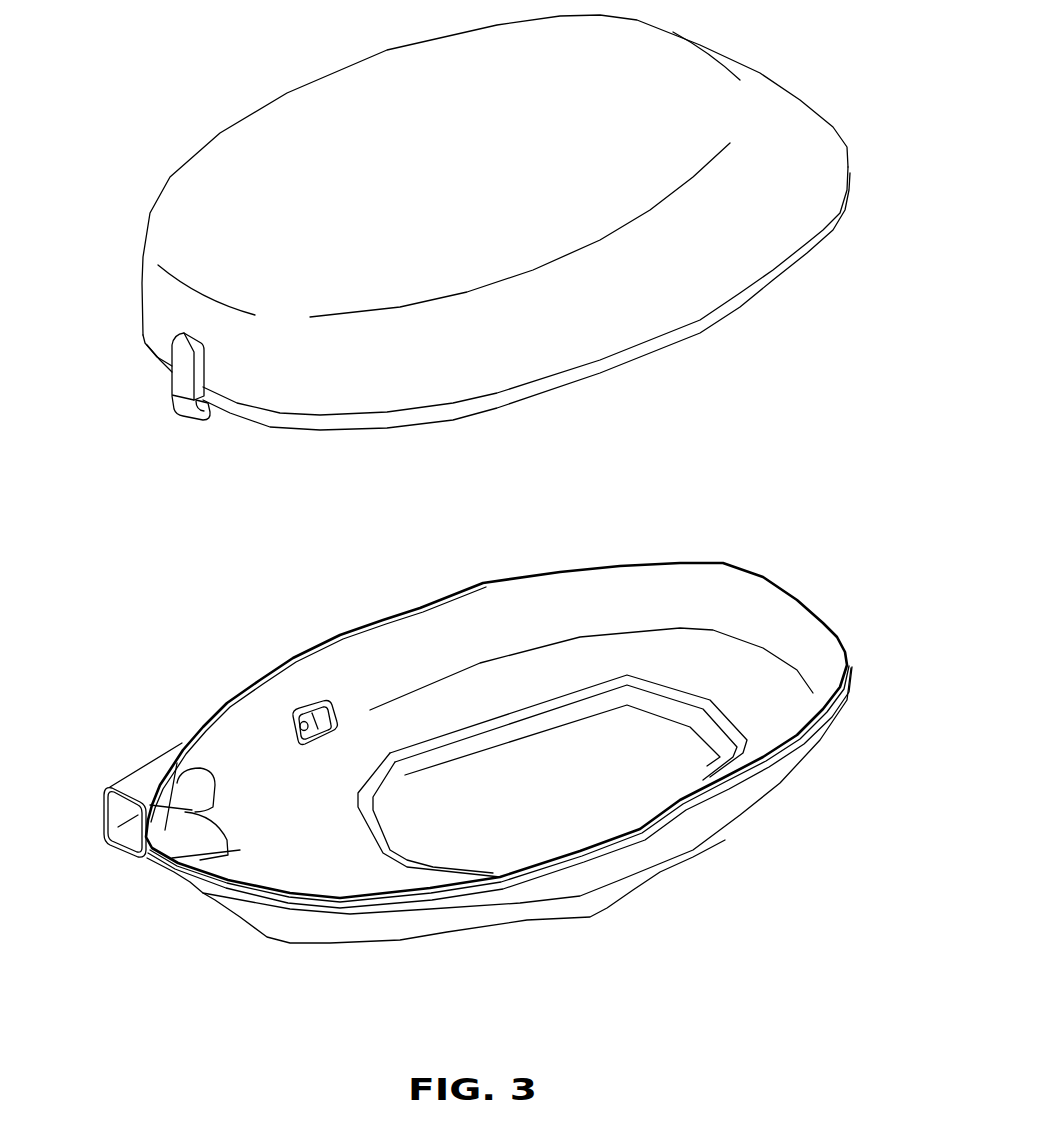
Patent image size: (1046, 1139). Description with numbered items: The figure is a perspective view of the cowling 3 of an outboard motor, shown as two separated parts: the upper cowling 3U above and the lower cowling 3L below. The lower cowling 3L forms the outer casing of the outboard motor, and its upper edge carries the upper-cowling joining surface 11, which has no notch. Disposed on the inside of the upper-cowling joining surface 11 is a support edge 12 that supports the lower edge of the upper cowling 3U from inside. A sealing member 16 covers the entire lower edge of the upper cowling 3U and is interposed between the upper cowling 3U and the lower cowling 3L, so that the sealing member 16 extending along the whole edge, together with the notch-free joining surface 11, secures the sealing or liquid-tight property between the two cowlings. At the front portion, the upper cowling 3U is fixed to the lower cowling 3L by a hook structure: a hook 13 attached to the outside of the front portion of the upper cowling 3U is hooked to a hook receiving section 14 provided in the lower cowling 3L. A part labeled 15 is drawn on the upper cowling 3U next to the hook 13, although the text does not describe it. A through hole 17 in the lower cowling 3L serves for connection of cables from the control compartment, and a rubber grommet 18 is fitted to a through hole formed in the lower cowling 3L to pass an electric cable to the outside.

The cowling 3 is at (882, 19).
The upper cowling 3U is at (473, 263).
The lower cowling 3L is at (452, 760).
The upper-cowling joining surface 11 is at (434, 903).
The support edge 12 is at (772, 588).
The hook 13 is at (185, 408).
The hook receiving section 14 is at (191, 897).
The latch 15 is at (180, 358).
The sealing member 16 is at (292, 425).
The through hole 17 is at (126, 811).
The rubber grommet 18 is at (308, 705).